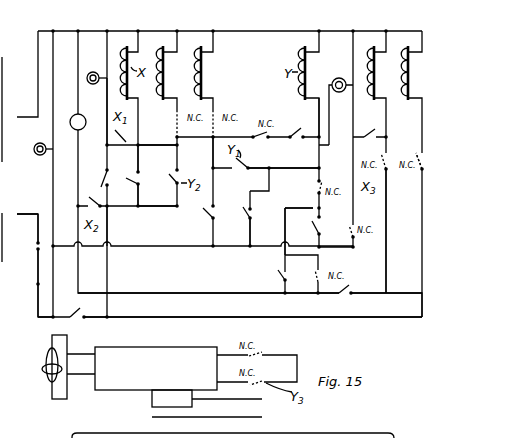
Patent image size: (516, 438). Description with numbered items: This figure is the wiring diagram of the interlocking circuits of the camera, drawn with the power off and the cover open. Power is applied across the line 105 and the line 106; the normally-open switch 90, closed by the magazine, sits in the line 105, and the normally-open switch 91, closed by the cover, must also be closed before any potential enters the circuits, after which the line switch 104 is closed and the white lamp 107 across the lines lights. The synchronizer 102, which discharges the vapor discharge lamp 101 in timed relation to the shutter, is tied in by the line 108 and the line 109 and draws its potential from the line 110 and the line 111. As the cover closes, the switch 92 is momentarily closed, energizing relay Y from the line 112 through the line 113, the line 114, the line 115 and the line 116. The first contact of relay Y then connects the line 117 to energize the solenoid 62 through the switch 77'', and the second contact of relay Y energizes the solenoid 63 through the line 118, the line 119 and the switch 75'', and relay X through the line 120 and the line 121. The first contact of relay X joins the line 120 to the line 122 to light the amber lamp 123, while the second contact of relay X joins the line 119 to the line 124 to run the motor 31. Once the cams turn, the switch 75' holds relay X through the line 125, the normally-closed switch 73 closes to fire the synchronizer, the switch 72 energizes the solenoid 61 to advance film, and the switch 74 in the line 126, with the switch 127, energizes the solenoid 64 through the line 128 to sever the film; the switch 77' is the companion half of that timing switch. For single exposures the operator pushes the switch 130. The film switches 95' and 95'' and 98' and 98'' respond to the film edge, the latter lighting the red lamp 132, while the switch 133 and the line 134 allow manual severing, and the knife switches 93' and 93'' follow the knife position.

The line 106 is at (222, 31).
The amber lamp 123 is at (94, 72).
The motor 31 is at (74, 113).
The line 122 is at (107, 115).
The solenoid 63 is at (167, 72).
The solenoid 62 is at (208, 72).
The solenoid 64 is at (376, 72).
The solenoid 61 is at (411, 72).
The red lamp 132 is at (339, 77).
The white lamp 107 is at (35, 163).
The timing switch 75' is at (93, 170).
The timing switch 75'' is at (162, 123).
The line 125 is at (110, 153).
The line 120 is at (145, 151).
The switch 130 is at (129, 184).
The line 121 is at (140, 196).
The line 118 is at (108, 223).
The line 119 is at (150, 207).
The line 113 is at (128, 247).
The line switch 104 is at (38, 243).
The normally-open switch 90 is at (38, 284).
The line 112 is at (48, 303).
The normally-open switch 91 is at (77, 316).
The synchronizer 102 is at (133, 340).
The vapor discharge lamp 101 is at (46, 382).
The line 110 is at (152, 402).
The line 111 is at (152, 392).
The line 105 is at (194, 317).
The line 124 is at (187, 292).
The line 108 is at (226, 355).
The normally-closed switch 73 is at (262, 354).
The line 109 is at (241, 384).
The switch 133 is at (277, 273).
The line 134 is at (285, 236).
The line 114 is at (250, 247).
The switch 92 is at (245, 209).
The film switch 95' is at (287, 207).
The film switch 95'' is at (302, 184).
The line 115 is at (301, 166).
The line 117 is at (213, 150).
The timing switch 77' is at (200, 221).
The timing switch 77'' is at (232, 112).
The normally-closed switch 74 is at (256, 133).
The switch 127 is at (299, 130).
The line 116 is at (320, 109).
The line 126 is at (364, 136).
The normally-closed switch 72 is at (417, 152).
The line 128 is at (386, 204).
The film switch 98' is at (327, 223).
The film switch 98'' is at (366, 243).
The knife switch 93' is at (385, 305).
The knife switch 93'' is at (328, 292).